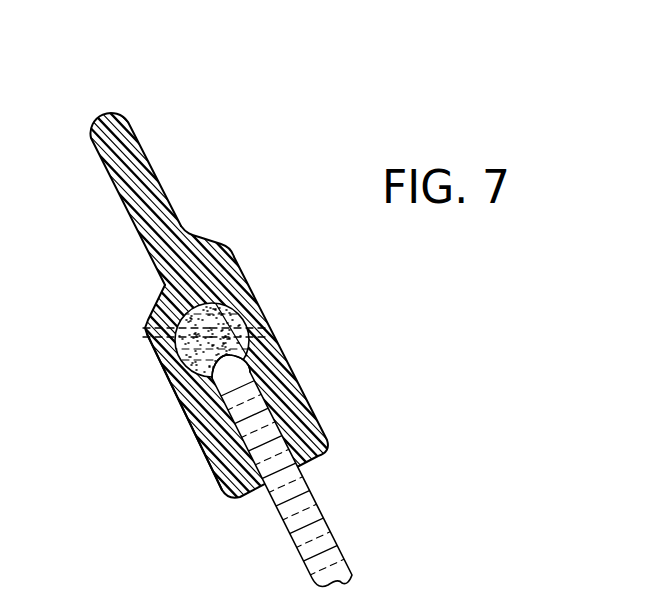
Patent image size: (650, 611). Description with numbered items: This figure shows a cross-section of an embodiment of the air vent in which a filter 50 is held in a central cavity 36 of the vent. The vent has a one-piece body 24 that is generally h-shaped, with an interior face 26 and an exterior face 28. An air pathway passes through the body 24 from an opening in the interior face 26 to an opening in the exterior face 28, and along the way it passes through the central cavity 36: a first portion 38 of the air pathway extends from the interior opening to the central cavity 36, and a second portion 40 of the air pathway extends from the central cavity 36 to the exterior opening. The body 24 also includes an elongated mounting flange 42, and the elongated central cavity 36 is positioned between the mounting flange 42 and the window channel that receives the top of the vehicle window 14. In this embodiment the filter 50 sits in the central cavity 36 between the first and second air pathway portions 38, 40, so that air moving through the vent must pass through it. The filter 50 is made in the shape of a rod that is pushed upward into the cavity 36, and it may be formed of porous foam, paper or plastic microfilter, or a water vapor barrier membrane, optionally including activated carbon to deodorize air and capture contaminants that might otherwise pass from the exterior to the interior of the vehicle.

The window 14 is at (307, 517).
The one-piece body 24 is at (213, 257).
The interior face 26 is at (178, 378).
The exterior face 28 is at (266, 348).
The central cavity 36 is at (250, 360).
The first portion of the air pathway 38 is at (150, 313).
The second portion of the air pathway 40 is at (262, 300).
The elongated mounting flange 42 is at (135, 178).
The filter 50 is at (195, 335).